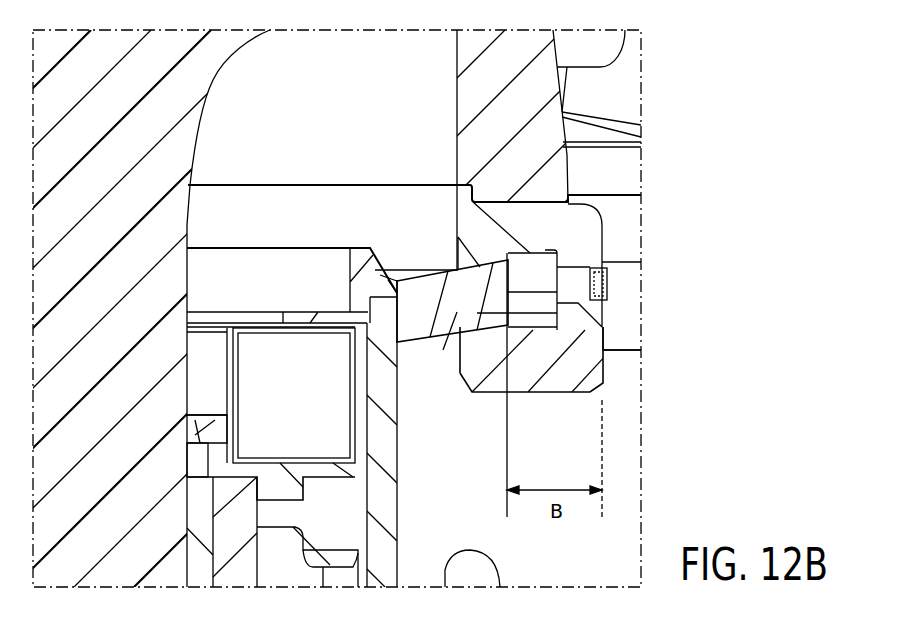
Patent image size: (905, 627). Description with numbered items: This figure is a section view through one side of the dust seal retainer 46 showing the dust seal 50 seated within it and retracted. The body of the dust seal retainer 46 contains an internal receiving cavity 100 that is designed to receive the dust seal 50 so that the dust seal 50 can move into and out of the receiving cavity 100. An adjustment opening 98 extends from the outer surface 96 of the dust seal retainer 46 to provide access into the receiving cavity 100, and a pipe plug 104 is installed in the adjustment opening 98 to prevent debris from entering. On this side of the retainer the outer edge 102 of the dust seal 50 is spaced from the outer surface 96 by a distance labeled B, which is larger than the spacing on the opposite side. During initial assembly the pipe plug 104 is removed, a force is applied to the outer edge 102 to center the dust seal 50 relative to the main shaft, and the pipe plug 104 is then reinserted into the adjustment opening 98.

The dust seal retainer 46 is at (471, 232).
The dust seal 50 is at (457, 312).
The outer surface 96 is at (603, 313).
The adjustment opening 98 is at (573, 283).
The receiving cavity 100 is at (545, 267).
The outer edge 102 is at (507, 288).
The pipe plug 104 is at (607, 287).